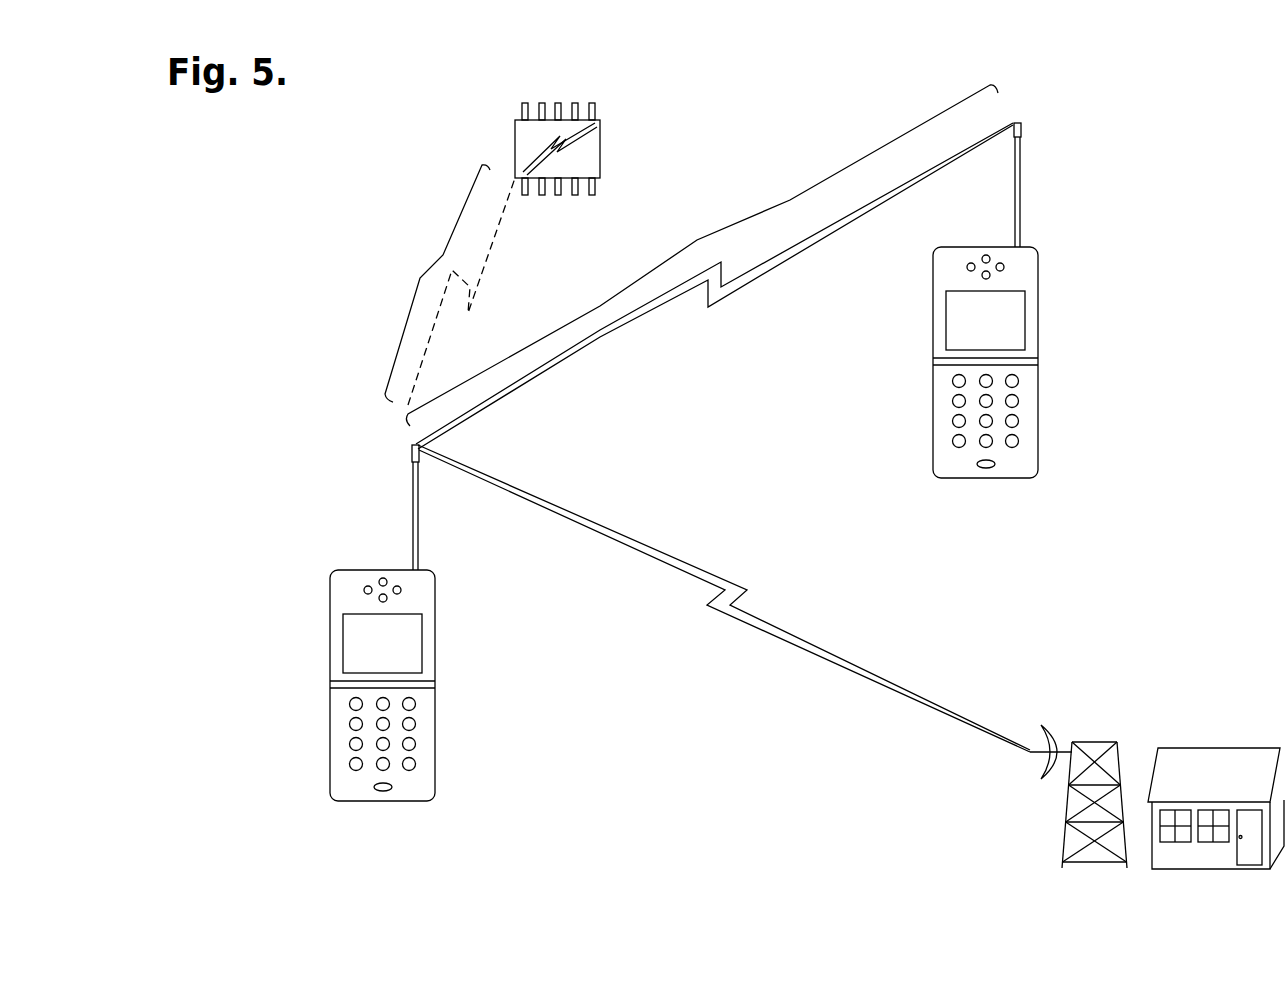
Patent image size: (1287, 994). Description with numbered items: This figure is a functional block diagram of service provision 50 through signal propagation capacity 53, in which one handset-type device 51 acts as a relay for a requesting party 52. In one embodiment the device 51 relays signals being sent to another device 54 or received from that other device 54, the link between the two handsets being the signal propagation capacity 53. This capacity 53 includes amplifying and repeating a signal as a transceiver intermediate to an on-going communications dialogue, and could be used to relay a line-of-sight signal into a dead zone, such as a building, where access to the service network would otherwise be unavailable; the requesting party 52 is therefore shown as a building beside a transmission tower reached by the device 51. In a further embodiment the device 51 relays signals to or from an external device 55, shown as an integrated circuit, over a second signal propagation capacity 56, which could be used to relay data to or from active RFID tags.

The service provision 50 is at (290, 142).
The device 51 is at (462, 683).
The requesting party 52 is at (1218, 742).
The signal propagation capacity 53 is at (709, 267).
The another device 54 is at (1072, 399).
The external device 55 is at (610, 145).
The signal propagation capacity 56 is at (450, 285).